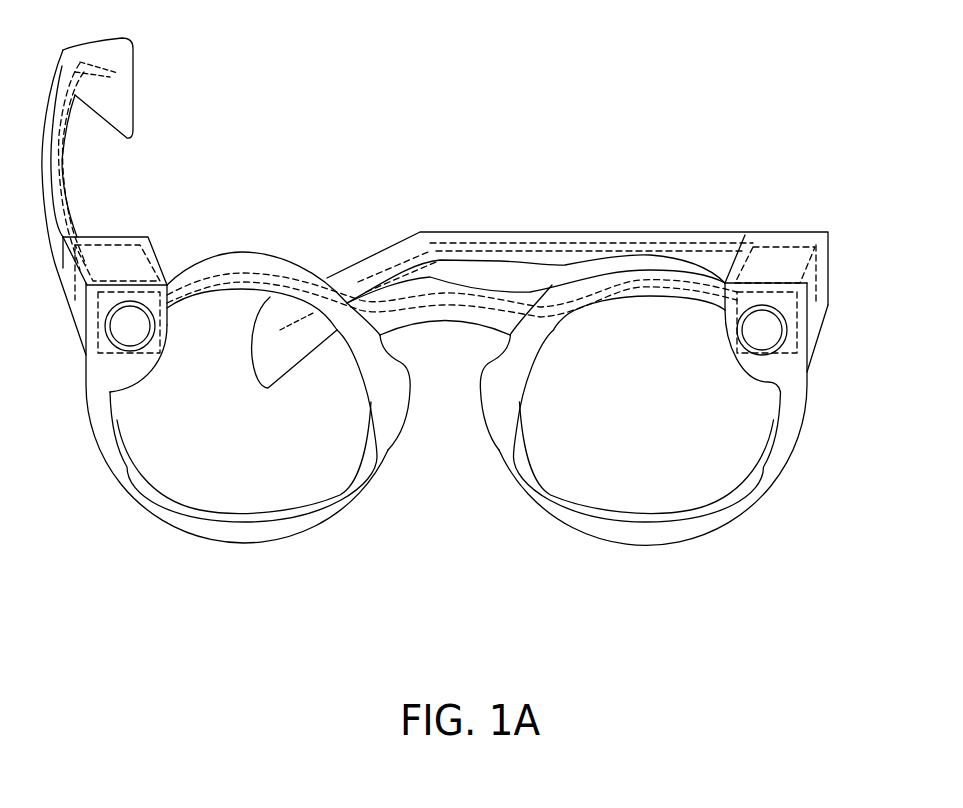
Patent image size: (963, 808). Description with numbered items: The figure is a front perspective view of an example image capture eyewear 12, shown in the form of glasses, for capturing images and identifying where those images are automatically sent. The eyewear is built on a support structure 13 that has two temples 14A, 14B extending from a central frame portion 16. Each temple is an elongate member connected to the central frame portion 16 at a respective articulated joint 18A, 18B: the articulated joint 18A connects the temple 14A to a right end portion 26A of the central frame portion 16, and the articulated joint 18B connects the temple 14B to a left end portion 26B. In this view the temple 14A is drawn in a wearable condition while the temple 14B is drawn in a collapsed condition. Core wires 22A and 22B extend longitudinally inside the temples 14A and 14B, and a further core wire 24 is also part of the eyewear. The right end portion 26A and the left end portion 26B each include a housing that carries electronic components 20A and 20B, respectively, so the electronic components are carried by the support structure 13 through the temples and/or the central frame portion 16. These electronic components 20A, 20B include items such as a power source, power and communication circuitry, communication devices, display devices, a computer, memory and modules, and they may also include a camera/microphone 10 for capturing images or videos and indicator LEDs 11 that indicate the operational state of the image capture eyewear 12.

The camera/microphone 10 is at (103, 341).
The indicator LEDs 11 is at (778, 342).
The image capture eyewear 12 is at (565, 533).
The support structure 13 is at (440, 266).
The temple 14A is at (147, 72).
The temple 14B is at (645, 220).
The central frame portion 16 is at (763, 500).
The articulated joint 18A is at (160, 248).
The articulated joint 18B is at (858, 222).
The electronic components 20A is at (78, 306).
The electronic components 20B is at (828, 307).
The core wire 22A is at (84, 55).
The core wire 22B is at (567, 240).
The core wire 24 is at (443, 318).
The right end portion 26A is at (128, 222).
The left end portion 26B is at (832, 190).